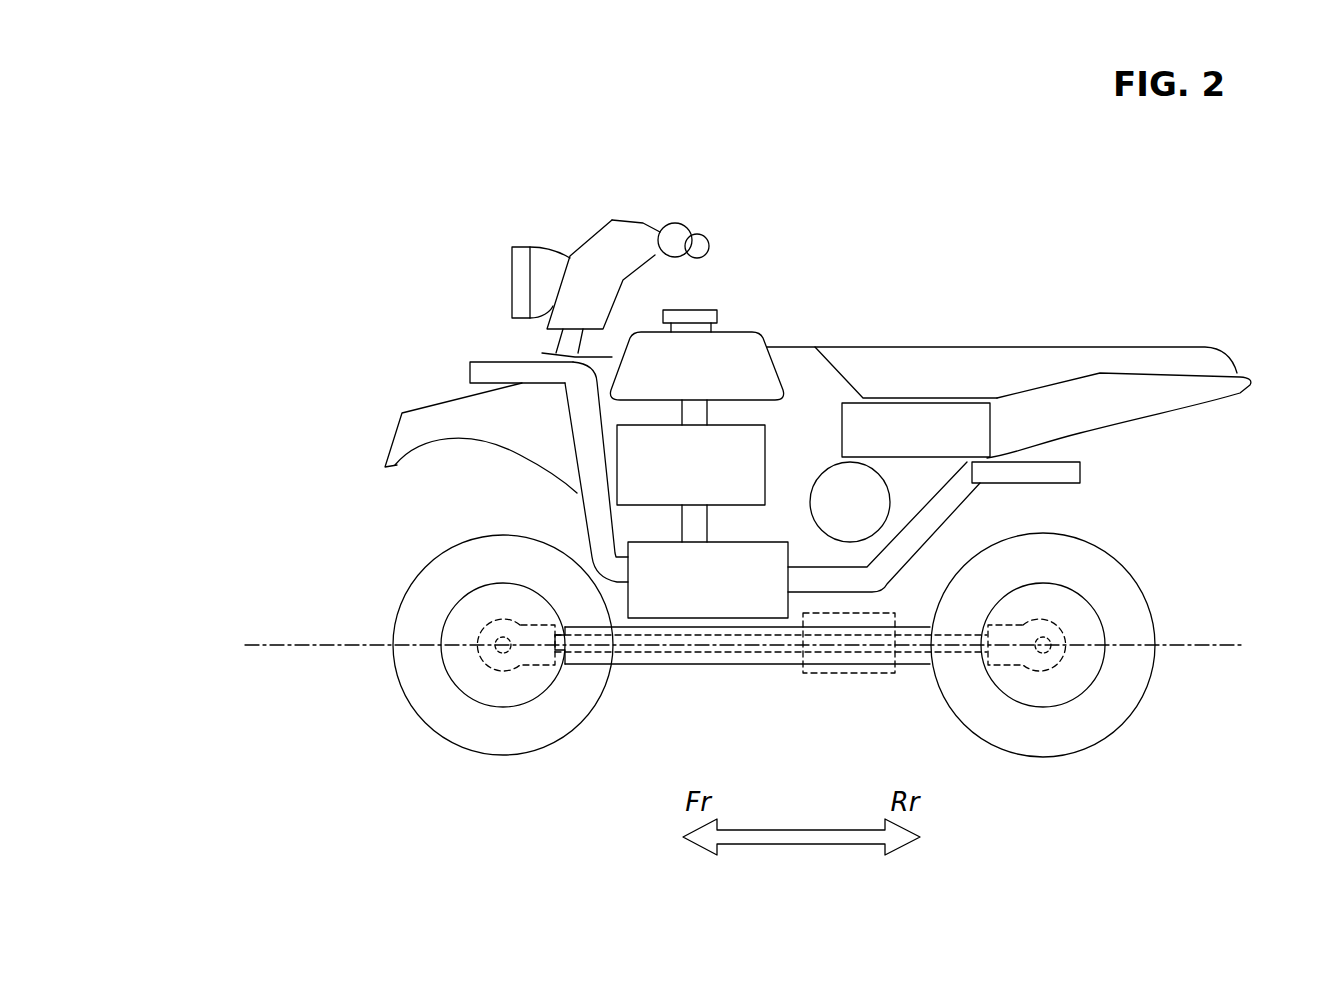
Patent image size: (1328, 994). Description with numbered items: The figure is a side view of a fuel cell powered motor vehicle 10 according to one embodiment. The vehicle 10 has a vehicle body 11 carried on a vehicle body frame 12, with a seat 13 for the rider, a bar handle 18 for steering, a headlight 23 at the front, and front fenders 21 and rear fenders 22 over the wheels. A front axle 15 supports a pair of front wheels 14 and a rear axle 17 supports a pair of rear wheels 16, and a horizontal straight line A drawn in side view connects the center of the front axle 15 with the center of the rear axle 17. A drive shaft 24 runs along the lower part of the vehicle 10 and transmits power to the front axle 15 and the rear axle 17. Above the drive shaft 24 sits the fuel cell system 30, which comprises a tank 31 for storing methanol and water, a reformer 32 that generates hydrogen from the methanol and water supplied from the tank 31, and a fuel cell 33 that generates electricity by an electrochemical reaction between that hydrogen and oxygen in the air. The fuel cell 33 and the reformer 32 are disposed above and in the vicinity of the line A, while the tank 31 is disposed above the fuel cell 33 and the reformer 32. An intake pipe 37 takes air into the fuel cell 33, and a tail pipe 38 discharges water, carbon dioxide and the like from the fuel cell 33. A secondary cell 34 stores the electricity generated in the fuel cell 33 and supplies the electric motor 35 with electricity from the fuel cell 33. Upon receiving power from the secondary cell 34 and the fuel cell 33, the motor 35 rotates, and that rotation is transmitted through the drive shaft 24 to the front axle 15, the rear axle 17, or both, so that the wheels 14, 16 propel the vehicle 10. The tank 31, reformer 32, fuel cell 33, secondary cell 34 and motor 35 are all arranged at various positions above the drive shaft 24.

The fuel cell powered motor vehicle 10 is at (406, 138).
The vehicle body 11 is at (805, 331).
The vehicle body frame 12 is at (915, 675).
The seat 13 is at (1050, 347).
The front wheels 14 is at (405, 598).
The front axle 15 is at (497, 650).
The rear wheels 16 is at (1110, 553).
The rear axle 17 is at (1048, 636).
The bar handle 18 is at (646, 222).
The front fenders 21 is at (438, 403).
The rear fenders 22 is at (1145, 390).
The headlight 23 is at (510, 263).
The drive shaft 24 is at (653, 652).
The fuel cell system 30 is at (797, 266).
The tank 31 is at (640, 333).
The reformer 32 is at (617, 452).
The fuel cell 33 is at (723, 598).
The secondary cell 34 is at (893, 415).
The electric motor 35 is at (818, 526).
The intake pipe 37 is at (493, 362).
The tail pipe 38 is at (1075, 452).
The horizontal straight line A is at (290, 643).